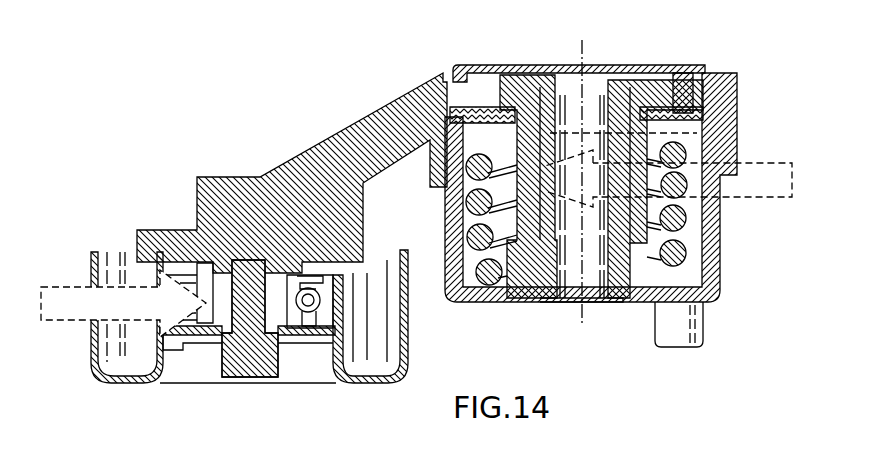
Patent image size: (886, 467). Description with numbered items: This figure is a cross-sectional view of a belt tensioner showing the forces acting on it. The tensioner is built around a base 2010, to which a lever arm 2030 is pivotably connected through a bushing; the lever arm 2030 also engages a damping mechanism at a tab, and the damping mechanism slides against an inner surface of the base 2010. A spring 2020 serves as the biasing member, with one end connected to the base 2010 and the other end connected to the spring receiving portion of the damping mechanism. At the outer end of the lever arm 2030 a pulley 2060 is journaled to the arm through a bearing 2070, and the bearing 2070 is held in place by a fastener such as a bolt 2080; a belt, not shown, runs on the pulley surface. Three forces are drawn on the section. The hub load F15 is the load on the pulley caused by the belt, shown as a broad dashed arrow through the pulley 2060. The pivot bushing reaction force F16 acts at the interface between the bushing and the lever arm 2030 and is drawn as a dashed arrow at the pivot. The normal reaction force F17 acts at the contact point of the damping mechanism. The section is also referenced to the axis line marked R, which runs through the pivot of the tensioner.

The base 2010 is at (712, 275).
The spring 2020 is at (487, 288).
The lever arm 2030 is at (312, 167).
The pulley 2060 is at (117, 386).
The bearing 2070 is at (322, 332).
The bolt 2080 is at (255, 378).
The hub load F15 is at (66, 307).
The pivot bushing reaction force F16 is at (766, 162).
The normal reaction force F17 is at (592, 138).
The axis R is at (582, 184).